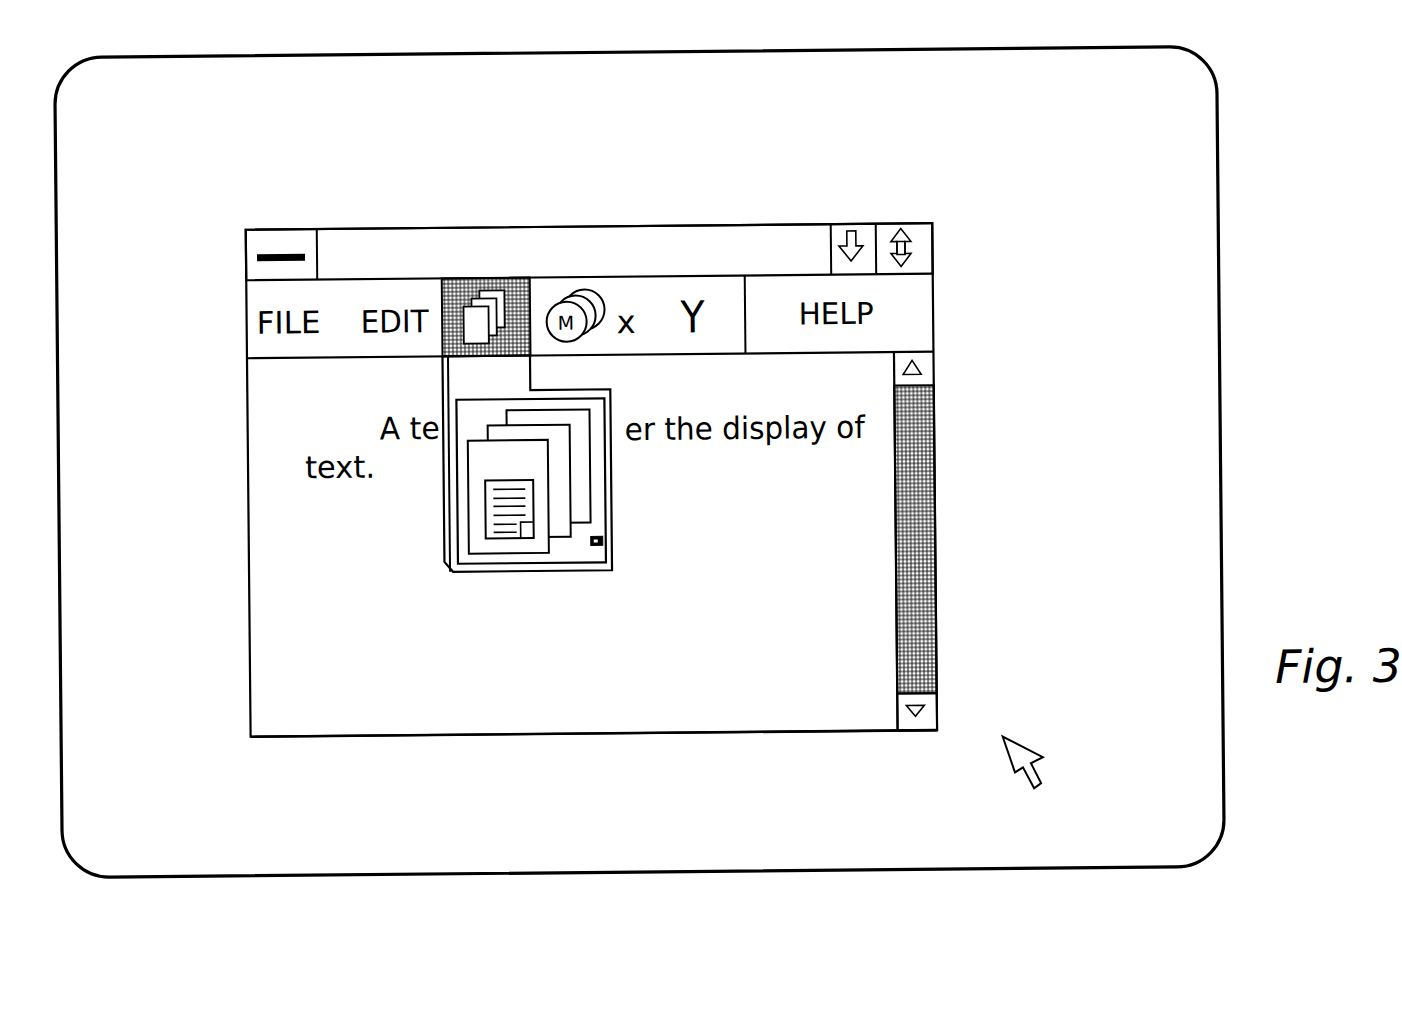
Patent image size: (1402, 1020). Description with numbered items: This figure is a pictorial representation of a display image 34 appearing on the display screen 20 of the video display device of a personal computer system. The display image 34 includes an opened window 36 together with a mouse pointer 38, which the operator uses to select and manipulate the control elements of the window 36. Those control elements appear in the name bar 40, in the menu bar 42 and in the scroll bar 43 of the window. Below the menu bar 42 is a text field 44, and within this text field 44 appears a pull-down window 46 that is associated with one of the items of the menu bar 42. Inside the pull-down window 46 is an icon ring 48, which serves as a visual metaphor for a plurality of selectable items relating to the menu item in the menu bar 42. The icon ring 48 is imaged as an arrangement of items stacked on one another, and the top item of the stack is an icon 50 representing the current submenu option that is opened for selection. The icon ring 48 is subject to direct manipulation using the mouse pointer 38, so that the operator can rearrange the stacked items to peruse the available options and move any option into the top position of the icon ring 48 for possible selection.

The display screen 20 is at (1222, 430).
The display image 34 is at (1189, 560).
The opened window 36 is at (929, 548).
The mouse pointer 38 is at (1031, 778).
The name bar 40 is at (740, 233).
The menu bar 42 is at (932, 314).
The scroll bar 43 is at (928, 714).
The text field 44 is at (742, 724).
The pull-down window 46 is at (582, 569).
The icon ring 48 is at (524, 540).
The icon 50 is at (468, 494).